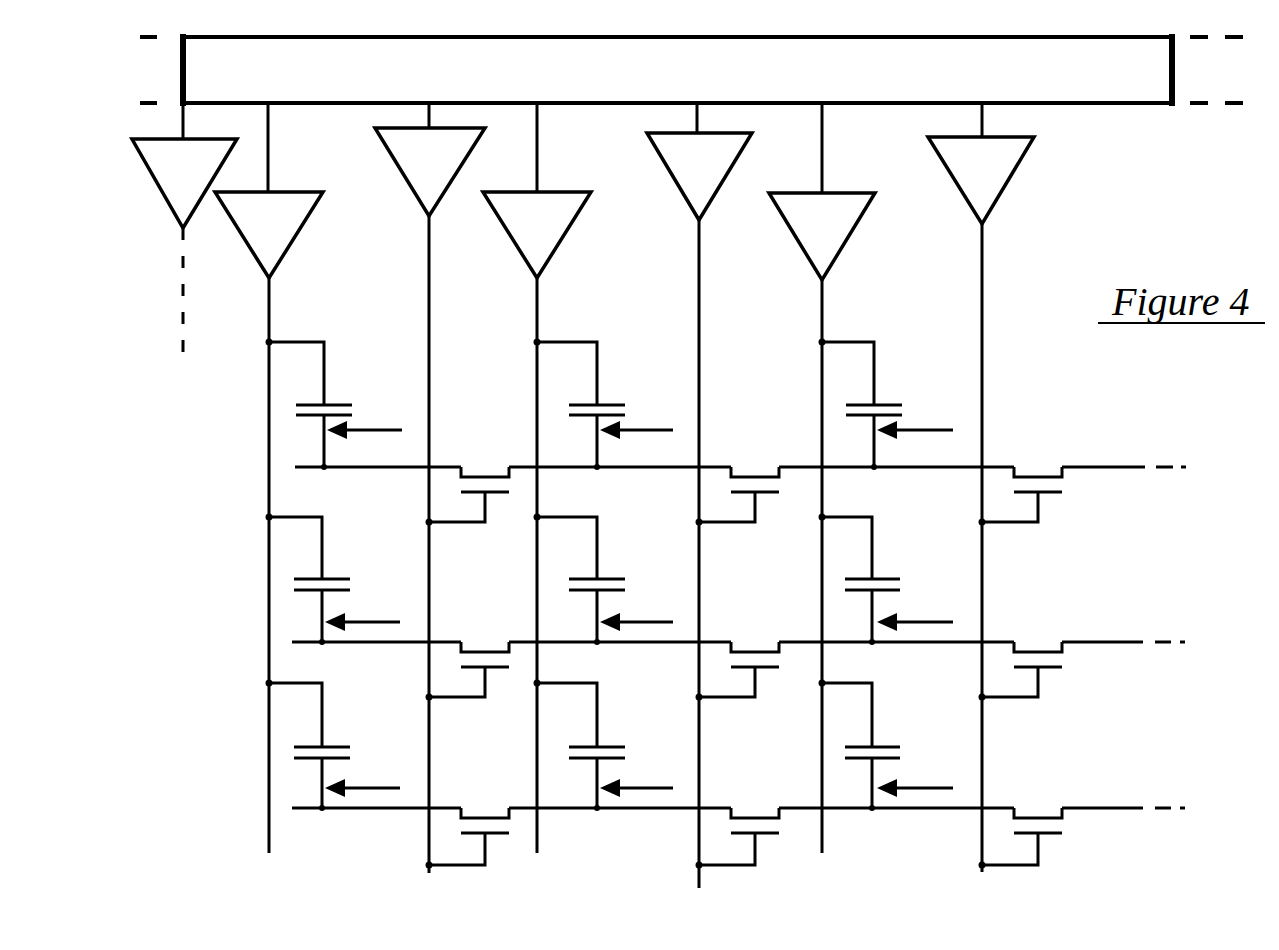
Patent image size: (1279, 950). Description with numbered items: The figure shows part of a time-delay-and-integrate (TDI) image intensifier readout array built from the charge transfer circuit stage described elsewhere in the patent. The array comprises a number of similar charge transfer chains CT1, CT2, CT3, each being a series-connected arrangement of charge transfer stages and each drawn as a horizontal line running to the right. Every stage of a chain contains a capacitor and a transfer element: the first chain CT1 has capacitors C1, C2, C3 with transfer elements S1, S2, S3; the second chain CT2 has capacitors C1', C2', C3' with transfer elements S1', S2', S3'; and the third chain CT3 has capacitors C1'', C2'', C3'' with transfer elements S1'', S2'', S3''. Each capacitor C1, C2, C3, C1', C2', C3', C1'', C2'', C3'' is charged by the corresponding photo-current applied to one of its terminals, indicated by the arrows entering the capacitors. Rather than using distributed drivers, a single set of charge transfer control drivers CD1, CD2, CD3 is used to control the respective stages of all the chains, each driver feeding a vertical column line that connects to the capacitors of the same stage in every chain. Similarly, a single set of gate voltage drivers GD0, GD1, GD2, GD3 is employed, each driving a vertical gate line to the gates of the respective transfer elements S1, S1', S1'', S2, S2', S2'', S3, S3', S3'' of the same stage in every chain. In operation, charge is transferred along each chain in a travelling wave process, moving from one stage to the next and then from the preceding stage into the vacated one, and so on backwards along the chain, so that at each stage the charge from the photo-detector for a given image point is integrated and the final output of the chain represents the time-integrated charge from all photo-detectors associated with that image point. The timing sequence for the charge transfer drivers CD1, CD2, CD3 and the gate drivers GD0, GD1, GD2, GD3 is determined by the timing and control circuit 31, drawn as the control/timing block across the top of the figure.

The timing and control circuit 31 is at (1078, 105).
The gate voltage driver GD0 is at (184, 229).
The gate voltage driver GD1 is at (430, 488).
The gate voltage driver GD2 is at (699, 495).
The gate voltage driver GD3 is at (981, 487).
The charge transfer control driver CD1 is at (269, 478).
The charge transfer control driver CD2 is at (537, 478).
The charge transfer control driver CD3 is at (822, 478).
The charge transfer chain CT1 is at (1108, 450).
The charge transfer chain CT2 is at (1101, 627).
The charge transfer chain CT3 is at (1106, 795).
The capacitor C1 is at (341, 405).
The capacitor C1' is at (334, 580).
The capacitor C1'' is at (338, 746).
The capacitor C2 is at (604, 405).
The capacitor C2' is at (605, 580).
The capacitor C2'' is at (608, 746).
The capacitor C3 is at (886, 405).
The capacitor C3' is at (886, 580).
The capacitor C3'' is at (888, 746).
The transfer element S1 is at (468, 476).
The transfer element S1' is at (468, 649).
The transfer element S1'' is at (468, 818).
The transfer element S2 is at (738, 477).
The transfer element S2' is at (738, 654).
The transfer element S2'' is at (738, 823).
The transfer element S3 is at (1021, 478).
The transfer element S3' is at (1021, 654).
The transfer element S3'' is at (1021, 821).